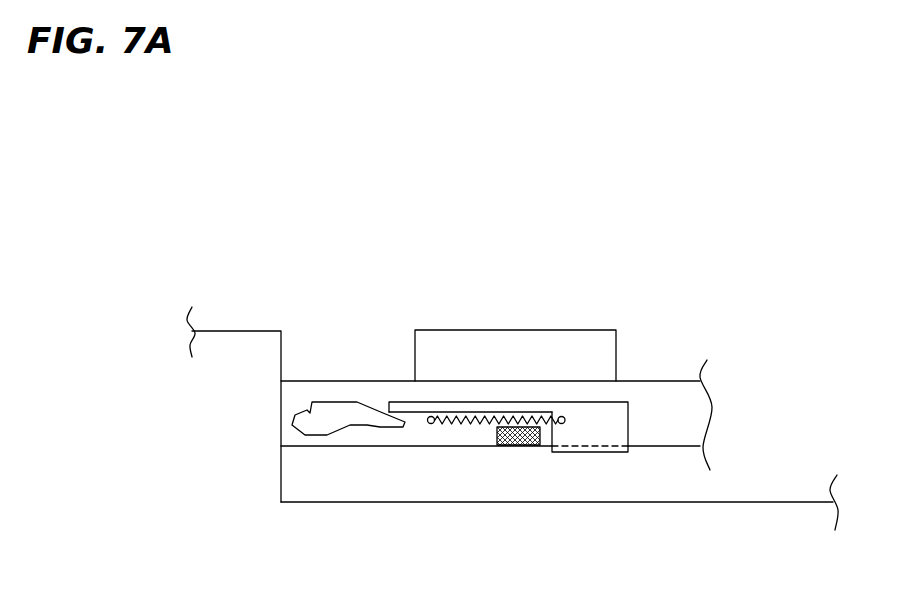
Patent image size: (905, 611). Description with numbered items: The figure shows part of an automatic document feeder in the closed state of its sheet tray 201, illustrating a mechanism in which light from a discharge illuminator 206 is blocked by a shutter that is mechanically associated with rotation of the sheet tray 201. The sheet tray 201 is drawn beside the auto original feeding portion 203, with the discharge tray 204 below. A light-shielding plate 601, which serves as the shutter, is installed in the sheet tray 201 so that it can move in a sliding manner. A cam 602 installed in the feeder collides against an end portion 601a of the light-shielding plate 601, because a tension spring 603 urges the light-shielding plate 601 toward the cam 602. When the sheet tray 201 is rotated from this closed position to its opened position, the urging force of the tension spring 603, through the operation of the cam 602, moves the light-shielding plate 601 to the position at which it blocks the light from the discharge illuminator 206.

The sheet tray 201 is at (343, 390).
The auto original feeding portion 203 is at (238, 330).
The discharge tray 204 is at (775, 497).
The discharge illuminator 206 is at (517, 437).
The light-shielding plate 601 is at (605, 435).
The end portion of the light-shielding plate 601a is at (402, 408).
The cam 602 is at (298, 410).
The tension spring 603 is at (455, 422).